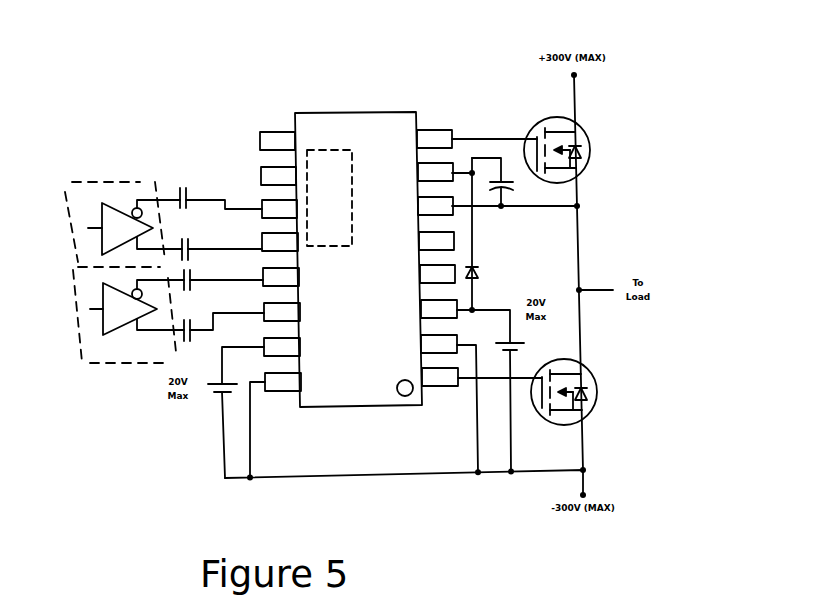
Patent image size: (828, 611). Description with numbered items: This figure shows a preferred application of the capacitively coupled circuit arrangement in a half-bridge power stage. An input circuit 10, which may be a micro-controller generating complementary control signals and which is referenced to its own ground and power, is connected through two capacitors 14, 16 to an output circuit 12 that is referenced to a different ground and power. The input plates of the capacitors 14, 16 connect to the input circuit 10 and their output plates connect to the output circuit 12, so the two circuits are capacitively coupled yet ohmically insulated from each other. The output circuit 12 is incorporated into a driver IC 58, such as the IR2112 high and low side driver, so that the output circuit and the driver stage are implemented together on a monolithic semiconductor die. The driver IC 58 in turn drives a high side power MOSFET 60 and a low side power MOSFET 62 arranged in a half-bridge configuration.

The input circuit 10 is at (90, 190).
The output circuit 12 is at (342, 192).
The capacitor 14 is at (202, 181).
The capacitor 16 is at (203, 231).
The driver IC 58 is at (348, 128).
The high side power MOSFET 60 is at (585, 147).
The low side power MOSFET 62 is at (598, 383).